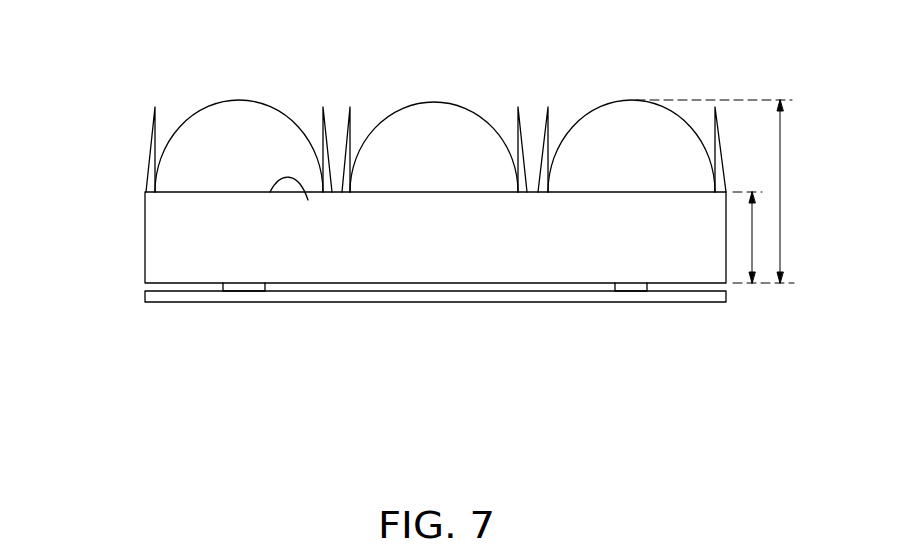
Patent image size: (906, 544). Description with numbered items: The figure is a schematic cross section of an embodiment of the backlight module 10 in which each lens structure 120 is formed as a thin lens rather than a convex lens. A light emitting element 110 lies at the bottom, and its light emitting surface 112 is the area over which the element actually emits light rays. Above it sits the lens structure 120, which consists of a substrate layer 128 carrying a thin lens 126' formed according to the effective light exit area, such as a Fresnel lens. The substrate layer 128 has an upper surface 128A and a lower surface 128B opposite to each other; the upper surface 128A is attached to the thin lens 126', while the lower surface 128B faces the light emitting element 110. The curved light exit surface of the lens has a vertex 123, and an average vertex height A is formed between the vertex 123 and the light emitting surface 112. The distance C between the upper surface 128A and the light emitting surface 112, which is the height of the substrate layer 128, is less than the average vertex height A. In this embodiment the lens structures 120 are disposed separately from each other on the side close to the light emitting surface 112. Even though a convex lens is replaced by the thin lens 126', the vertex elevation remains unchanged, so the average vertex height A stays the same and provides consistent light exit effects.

The backlight module 10 is at (122, 26).
The lens structure 120 is at (76, 146).
The substrate layer 128 is at (172, 227).
The thin lens 126' is at (399, 149).
The vertex 123 is at (632, 100).
The upper surface 128A is at (308, 200).
The lower surface 128B is at (265, 284).
The light emitting element 110 is at (235, 291).
The light emitting surface 112 is at (632, 283).